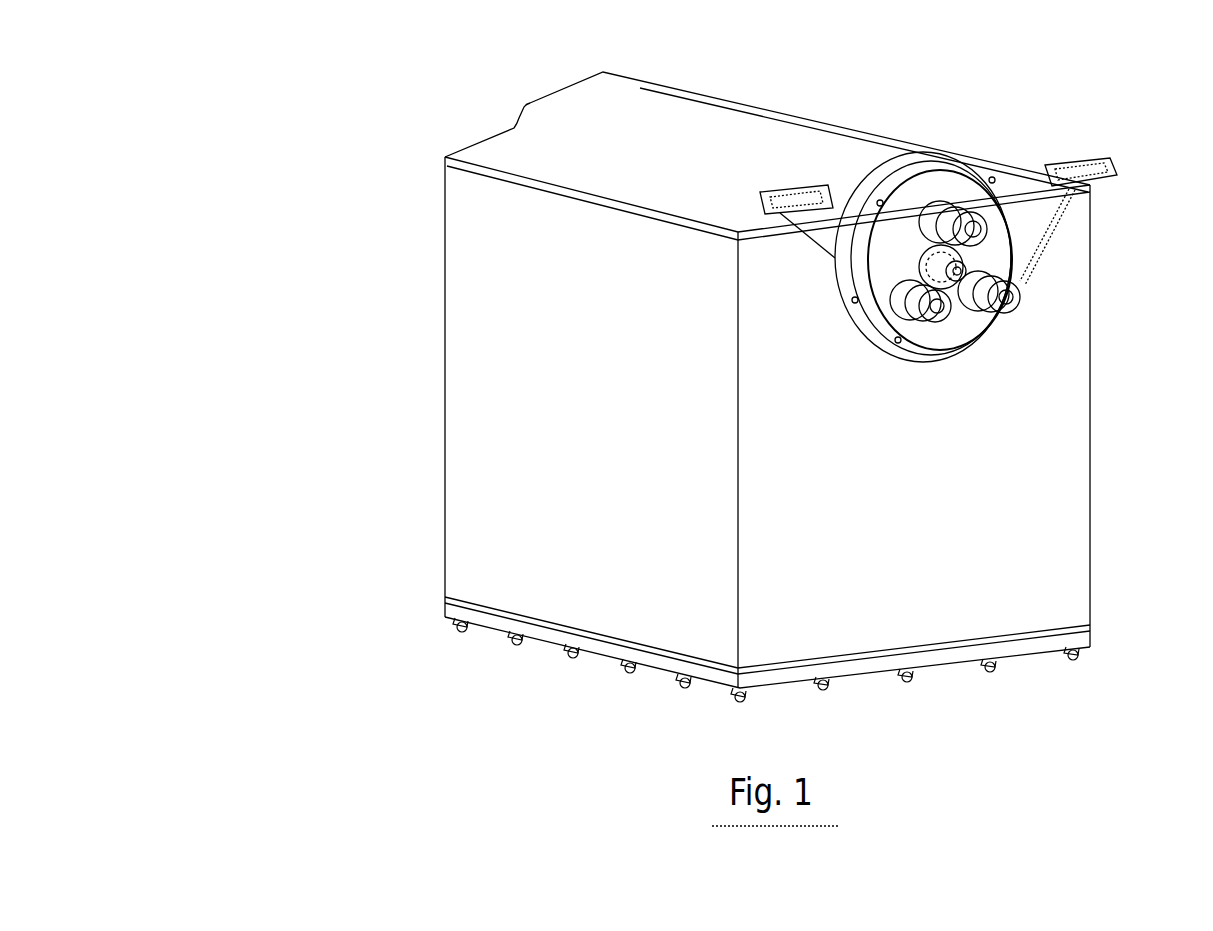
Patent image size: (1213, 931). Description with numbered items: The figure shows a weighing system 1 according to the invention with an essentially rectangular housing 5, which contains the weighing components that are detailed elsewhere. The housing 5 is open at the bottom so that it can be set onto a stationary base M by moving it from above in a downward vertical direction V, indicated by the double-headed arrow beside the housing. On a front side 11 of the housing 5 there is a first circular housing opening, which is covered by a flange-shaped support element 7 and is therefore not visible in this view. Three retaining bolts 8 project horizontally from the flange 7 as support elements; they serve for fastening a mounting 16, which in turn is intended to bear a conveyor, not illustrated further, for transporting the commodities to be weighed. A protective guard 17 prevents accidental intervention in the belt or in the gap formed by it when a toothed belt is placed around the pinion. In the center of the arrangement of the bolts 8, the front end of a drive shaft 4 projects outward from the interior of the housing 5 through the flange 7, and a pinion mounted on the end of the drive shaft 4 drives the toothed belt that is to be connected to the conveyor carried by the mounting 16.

The weighing system 1 is at (355, 204).
The drive shaft 4 is at (963, 268).
The housing 5 is at (541, 360).
The flange-shaped support element 7 is at (903, 213).
The retaining bolts 8 is at (1020, 297).
The front side 11 is at (1035, 518).
The mounting 16 is at (1113, 165).
The protective guard 17 is at (983, 253).
The stationary base M is at (460, 618).
The vertical direction V is at (355, 533).